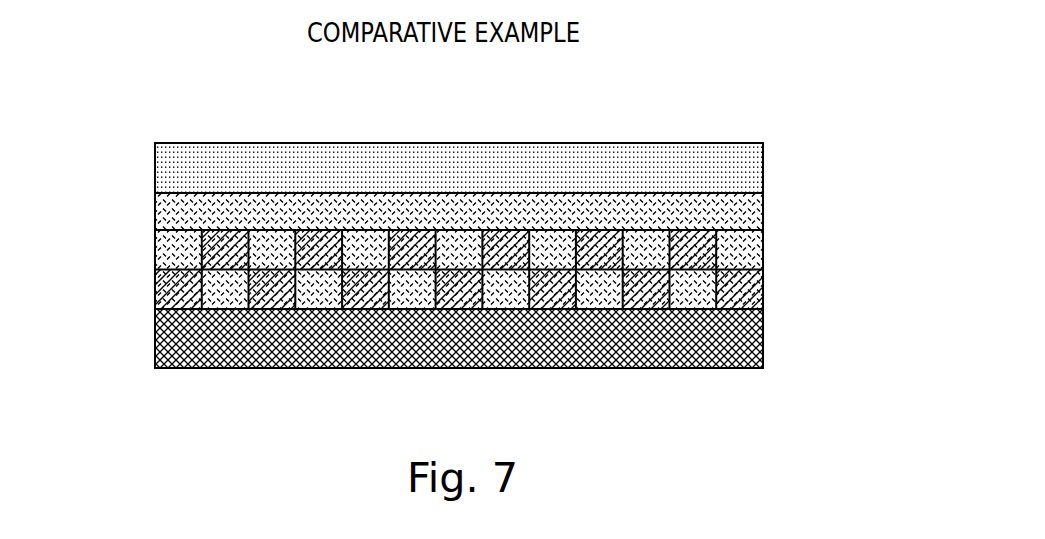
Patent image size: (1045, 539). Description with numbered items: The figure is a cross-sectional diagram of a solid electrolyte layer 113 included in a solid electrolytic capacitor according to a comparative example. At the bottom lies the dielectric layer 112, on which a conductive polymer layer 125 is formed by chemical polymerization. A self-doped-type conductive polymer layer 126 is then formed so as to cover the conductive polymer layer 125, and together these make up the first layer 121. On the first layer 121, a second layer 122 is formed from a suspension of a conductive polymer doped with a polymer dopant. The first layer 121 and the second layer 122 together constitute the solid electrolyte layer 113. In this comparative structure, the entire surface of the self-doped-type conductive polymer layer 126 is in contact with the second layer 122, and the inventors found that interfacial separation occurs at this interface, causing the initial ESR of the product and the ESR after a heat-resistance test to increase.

The dielectric layer 112 is at (762, 333).
The solid electrolyte layer 113 is at (487, 224).
The first layer 121 is at (447, 250).
The second layer 122 is at (750, 166).
The conductive polymer layer 125 is at (160, 287).
The self-doped-type conductive polymer layer 126 is at (160, 209).